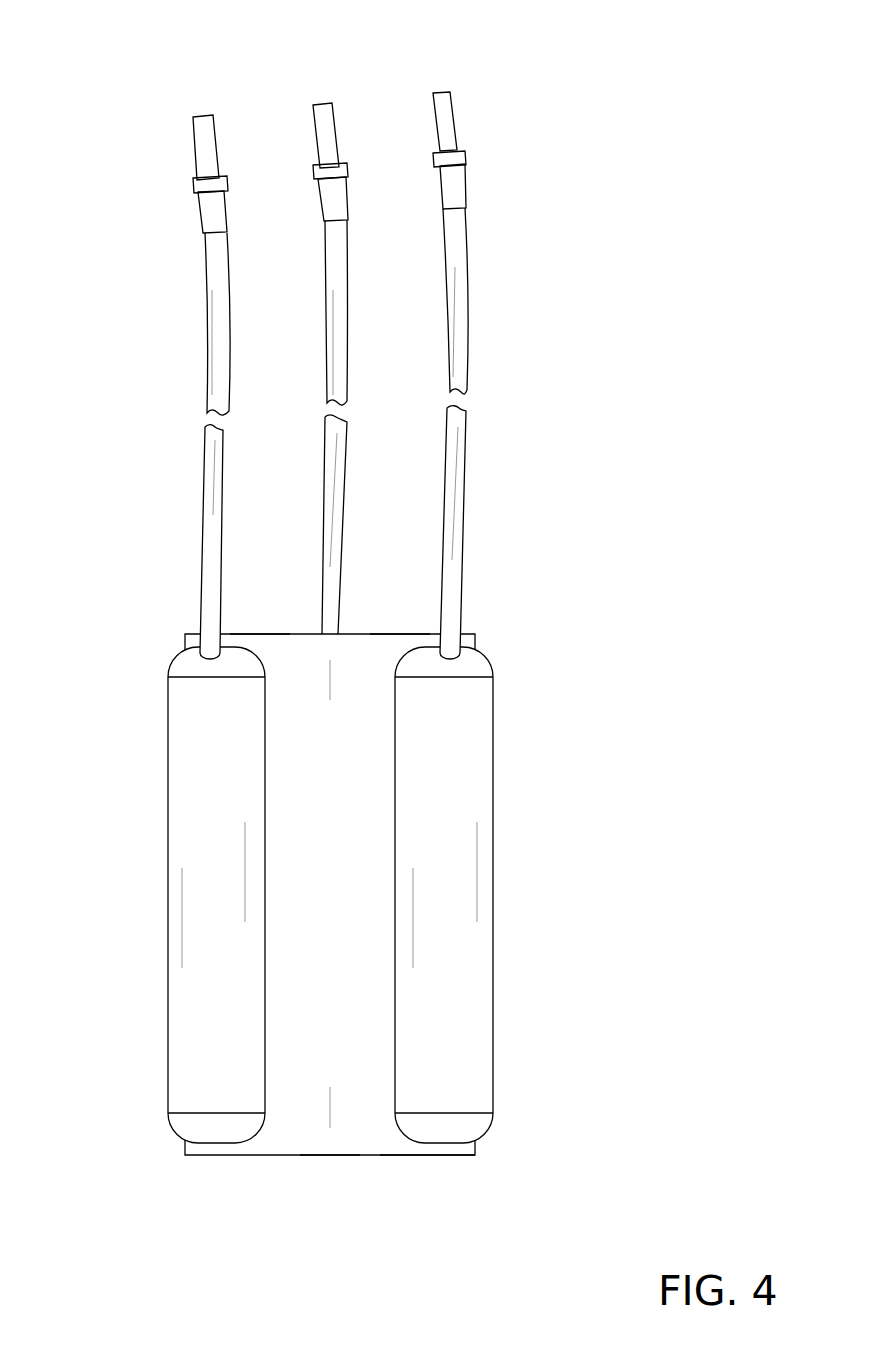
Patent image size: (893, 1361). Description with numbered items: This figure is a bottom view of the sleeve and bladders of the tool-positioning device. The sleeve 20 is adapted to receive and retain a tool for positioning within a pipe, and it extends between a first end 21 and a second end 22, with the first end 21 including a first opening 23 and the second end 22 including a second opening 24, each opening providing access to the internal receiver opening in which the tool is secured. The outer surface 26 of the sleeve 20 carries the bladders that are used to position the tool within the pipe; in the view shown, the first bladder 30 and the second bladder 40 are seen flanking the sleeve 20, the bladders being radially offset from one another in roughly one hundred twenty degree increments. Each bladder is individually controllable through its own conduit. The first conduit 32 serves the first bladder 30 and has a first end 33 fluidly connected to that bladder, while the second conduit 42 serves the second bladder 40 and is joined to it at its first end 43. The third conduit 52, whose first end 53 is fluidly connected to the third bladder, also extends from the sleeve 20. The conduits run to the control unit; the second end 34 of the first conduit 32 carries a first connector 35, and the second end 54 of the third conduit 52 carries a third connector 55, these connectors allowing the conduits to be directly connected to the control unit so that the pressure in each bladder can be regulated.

The sleeve 20 is at (290, 1132).
The first end 21 is at (265, 634).
The second end 22 is at (397, 1155).
The first opening 23 is at (388, 634).
The second opening 24 is at (330, 1155).
The outer surface 26 is at (327, 793).
The first bladder 30 is at (455, 1033).
The first conduit 32 is at (469, 337).
The first end of first conduit 33 is at (462, 617).
The second end of first conduit 34 is at (205, 114).
The first connector 35 is at (200, 213).
The second bladder 40 is at (185, 1035).
The second conduit 42 is at (207, 377).
The first end of second conduit 43 is at (200, 630).
The third conduit 52 is at (348, 353).
The first end of third conduit 53 is at (340, 623).
The second end of third conduit 54 is at (323, 103).
The third connector 55 is at (345, 193).